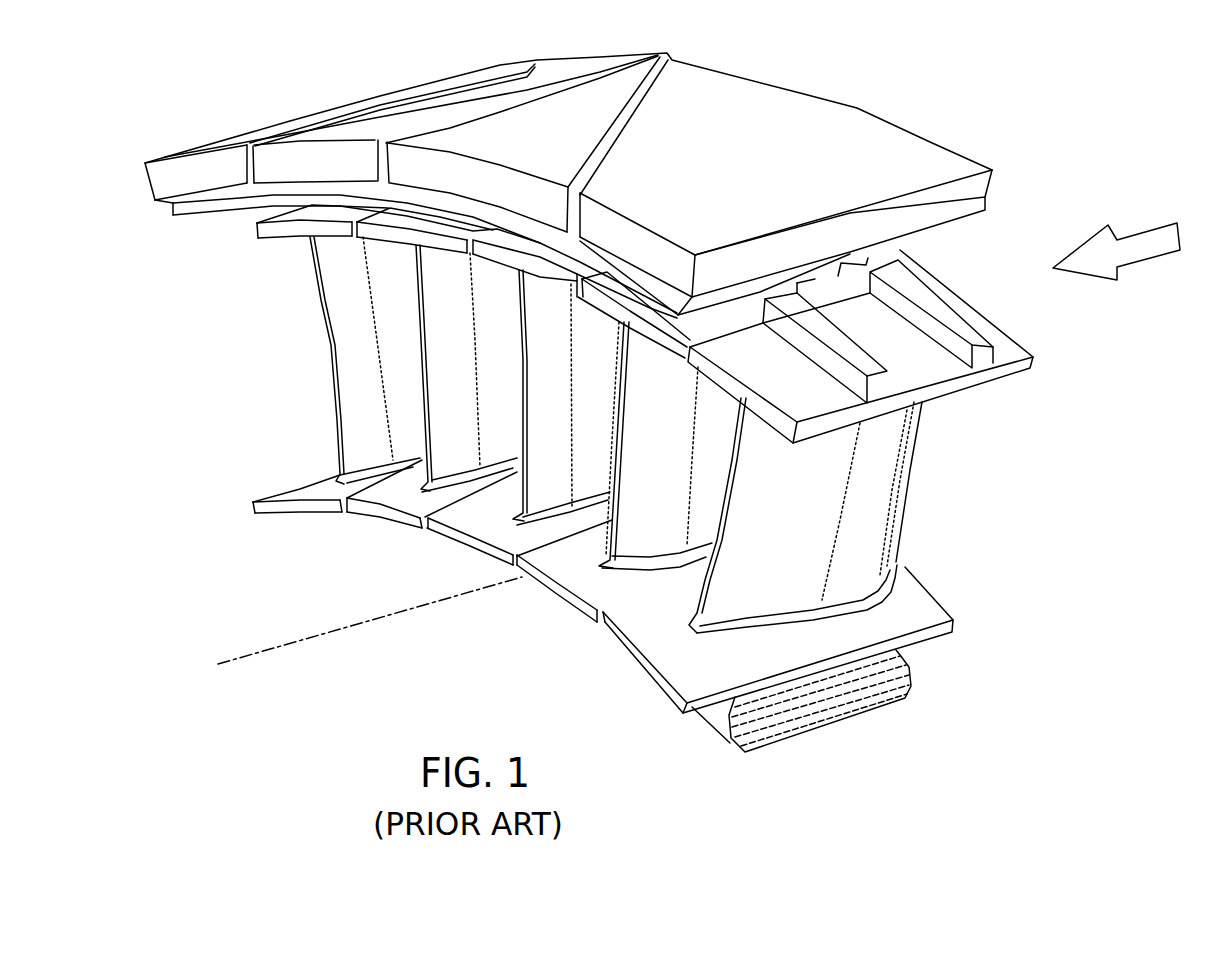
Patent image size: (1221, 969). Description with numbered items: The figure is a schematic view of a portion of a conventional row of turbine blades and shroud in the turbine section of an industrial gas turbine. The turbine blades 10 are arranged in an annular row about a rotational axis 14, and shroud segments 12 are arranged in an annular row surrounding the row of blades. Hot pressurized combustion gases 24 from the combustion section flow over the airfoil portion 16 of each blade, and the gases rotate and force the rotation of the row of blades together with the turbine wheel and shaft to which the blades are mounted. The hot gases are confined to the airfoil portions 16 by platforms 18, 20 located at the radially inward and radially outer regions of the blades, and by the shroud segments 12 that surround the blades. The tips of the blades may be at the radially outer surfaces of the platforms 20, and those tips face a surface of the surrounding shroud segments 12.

The turbine blades 10 is at (630, 402).
The shroud segments 12 is at (800, 98).
The rotational axis 14 is at (297, 640).
The airfoil portion 16 is at (338, 364).
The platform 18 is at (910, 613).
The platform 20 is at (1017, 370).
The combustion gas flow 24 is at (1163, 250).